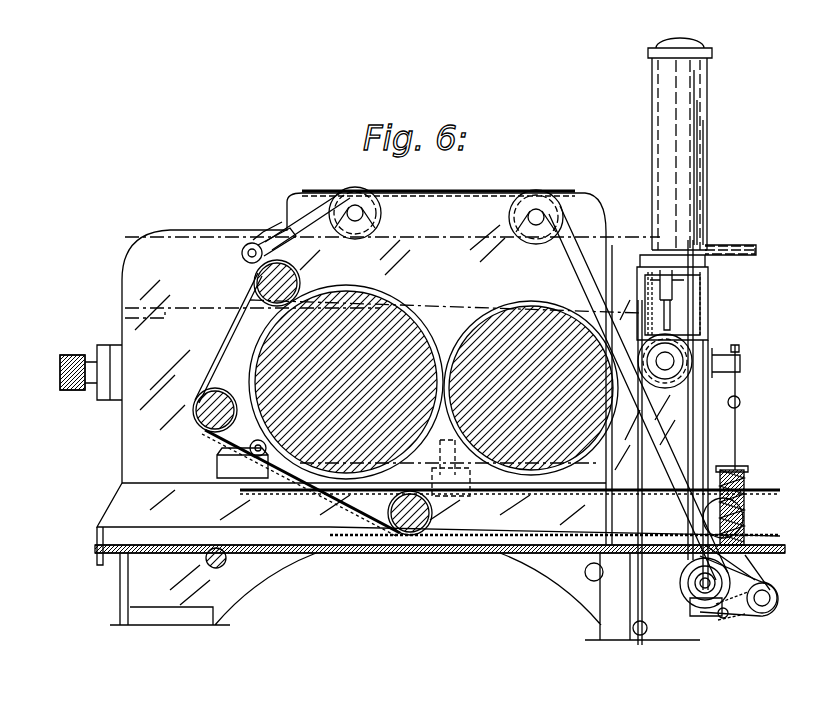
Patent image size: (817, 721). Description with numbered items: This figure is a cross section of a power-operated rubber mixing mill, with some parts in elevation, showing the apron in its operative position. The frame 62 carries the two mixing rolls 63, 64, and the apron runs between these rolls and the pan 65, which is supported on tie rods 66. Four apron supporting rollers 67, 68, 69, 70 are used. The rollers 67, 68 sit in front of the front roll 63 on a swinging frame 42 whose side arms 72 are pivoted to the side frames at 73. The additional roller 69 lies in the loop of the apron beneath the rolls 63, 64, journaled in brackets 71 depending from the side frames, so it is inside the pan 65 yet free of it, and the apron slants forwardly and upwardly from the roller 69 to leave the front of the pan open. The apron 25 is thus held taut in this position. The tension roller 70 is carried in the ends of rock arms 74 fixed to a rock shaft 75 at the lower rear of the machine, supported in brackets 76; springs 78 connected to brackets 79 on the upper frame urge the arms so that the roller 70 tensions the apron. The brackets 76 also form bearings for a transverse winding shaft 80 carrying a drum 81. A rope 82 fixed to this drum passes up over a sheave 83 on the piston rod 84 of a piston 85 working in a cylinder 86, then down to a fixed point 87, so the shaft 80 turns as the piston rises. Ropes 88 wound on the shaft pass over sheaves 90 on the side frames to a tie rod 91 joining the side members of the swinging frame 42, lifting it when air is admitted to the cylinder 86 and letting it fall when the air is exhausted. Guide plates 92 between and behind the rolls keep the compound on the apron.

The belt 25 is at (353, 520).
The frame portion 42 is at (200, 335).
The frame 62 is at (210, 242).
The mixing roll 63 is at (346, 382).
The mixing roll 64 is at (531, 388).
The pan 65 is at (440, 561).
The tie rods 66 is at (226, 566).
The apron supporting roller 67 is at (256, 277).
The apron supporting roller 68 is at (198, 420).
The apron supporting roller 69 is at (410, 537).
The tension roller 70 is at (744, 518).
The brackets 71 is at (441, 499).
The side arms 72 is at (240, 323).
The pivot 73 is at (215, 463).
The rock arms 74 is at (750, 575).
The rock shaft 75 is at (762, 608).
The brackets 76 is at (742, 613).
The springs 78 is at (745, 488).
The brackets 79 is at (742, 368).
The winding shaft 80 is at (700, 591).
The drum 81 is at (705, 612).
The rope 82 is at (694, 437).
The sheave 83 is at (700, 343).
The piston rod 84 is at (703, 212).
The piston 85 is at (698, 80).
The cylinder 86 is at (700, 172).
The fixed point 87 is at (646, 640).
The ropes 88 is at (472, 193).
The sheaves 90 is at (355, 196).
The tie rod 91 is at (258, 242).
The guide members or plates 92 is at (482, 473).